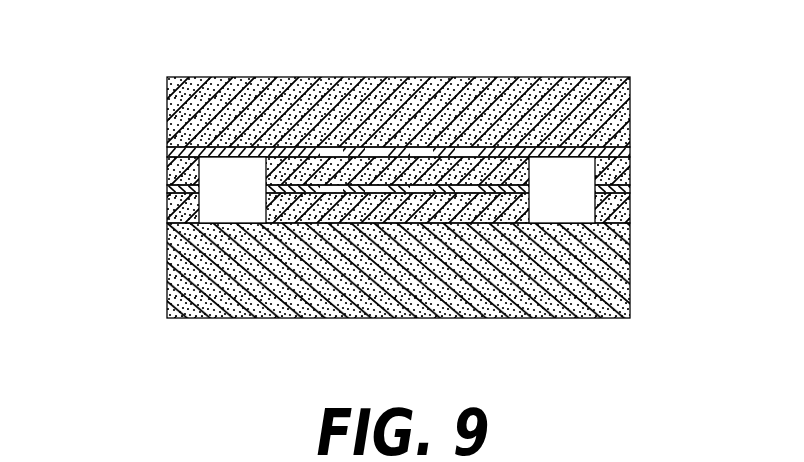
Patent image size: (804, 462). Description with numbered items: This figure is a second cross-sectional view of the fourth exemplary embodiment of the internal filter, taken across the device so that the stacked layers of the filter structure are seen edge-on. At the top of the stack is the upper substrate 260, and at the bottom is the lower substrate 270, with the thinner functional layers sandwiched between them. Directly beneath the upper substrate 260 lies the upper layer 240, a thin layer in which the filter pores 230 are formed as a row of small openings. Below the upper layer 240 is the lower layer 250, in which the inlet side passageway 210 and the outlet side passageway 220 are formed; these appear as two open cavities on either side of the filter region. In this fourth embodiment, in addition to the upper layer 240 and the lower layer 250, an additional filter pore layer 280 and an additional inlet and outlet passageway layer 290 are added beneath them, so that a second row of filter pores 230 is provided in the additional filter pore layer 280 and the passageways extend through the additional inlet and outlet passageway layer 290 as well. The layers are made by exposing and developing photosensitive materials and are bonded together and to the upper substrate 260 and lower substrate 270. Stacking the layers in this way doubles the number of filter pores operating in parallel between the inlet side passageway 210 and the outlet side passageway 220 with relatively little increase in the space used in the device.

The inlet side passageway 210 is at (230, 217).
The outlet side passageway 220 is at (563, 217).
The filter pores 230 is at (463, 150).
The upper layer 240 is at (167, 152).
The lower layer 250 is at (167, 177).
The upper substrate 260 is at (167, 103).
The lower substrate 270 is at (167, 272).
The additional filter pore layer 280 is at (167, 195).
The additional inlet and outlet passageway layer 290 is at (167, 212).